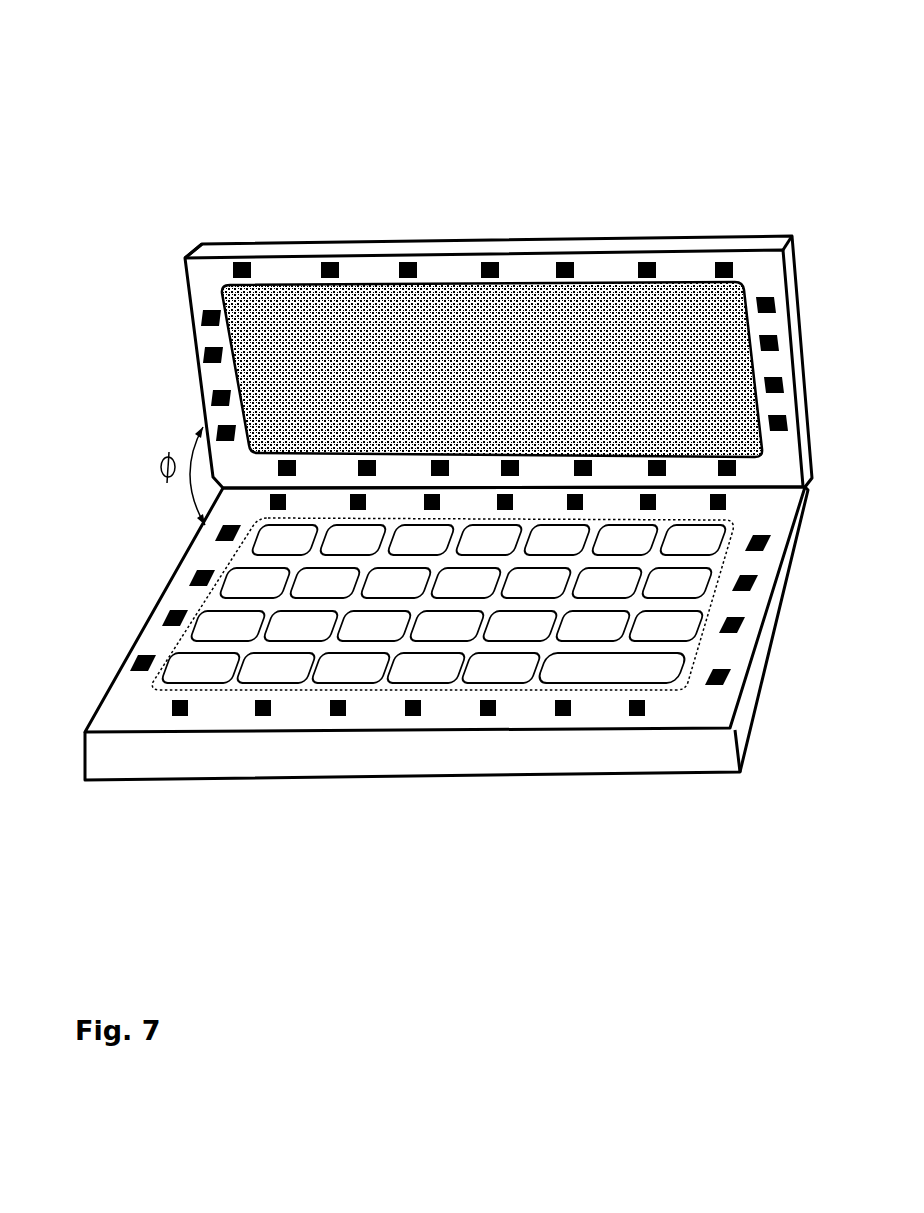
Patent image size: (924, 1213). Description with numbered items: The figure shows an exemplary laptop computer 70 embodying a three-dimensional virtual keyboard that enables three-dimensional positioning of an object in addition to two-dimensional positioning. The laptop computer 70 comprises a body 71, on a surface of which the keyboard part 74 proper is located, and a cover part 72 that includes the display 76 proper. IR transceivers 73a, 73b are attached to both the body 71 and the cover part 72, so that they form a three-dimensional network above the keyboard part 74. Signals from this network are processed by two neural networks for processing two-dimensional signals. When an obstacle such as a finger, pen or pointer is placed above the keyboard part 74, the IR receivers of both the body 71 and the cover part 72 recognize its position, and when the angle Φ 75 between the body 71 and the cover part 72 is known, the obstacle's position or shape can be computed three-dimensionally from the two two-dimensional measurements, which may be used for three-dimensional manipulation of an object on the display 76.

The laptop computer 70 is at (475, 855).
The body 71 is at (392, 747).
The cover part 72 is at (677, 240).
The IR transceivers 73a is at (263, 716).
The IR transceivers 73b is at (331, 262).
The keyboard part 74 is at (681, 645).
The angle Φ 75 is at (190, 488).
The display 76 is at (518, 300).